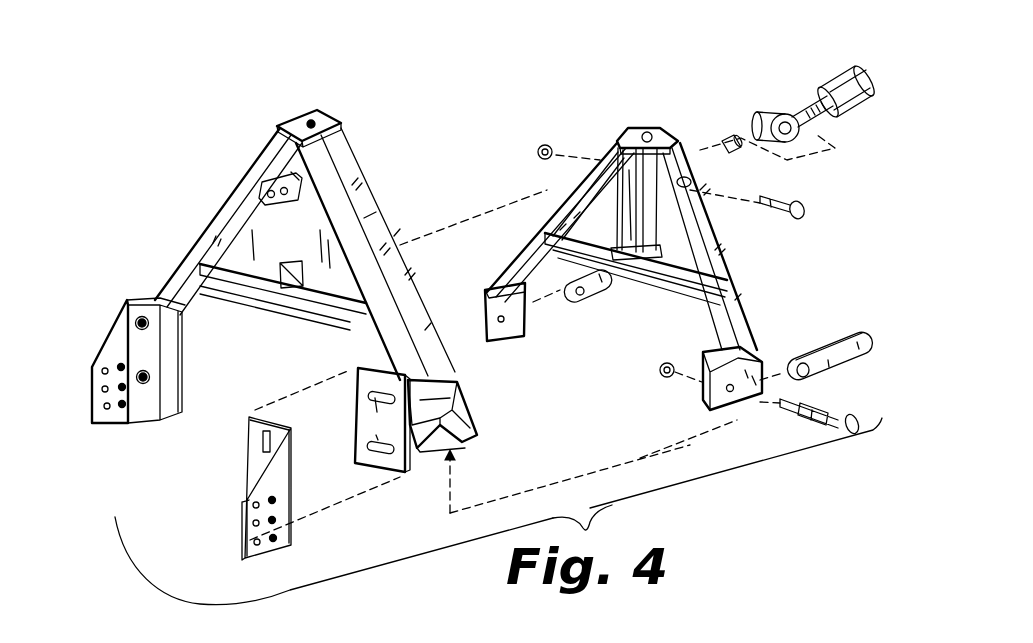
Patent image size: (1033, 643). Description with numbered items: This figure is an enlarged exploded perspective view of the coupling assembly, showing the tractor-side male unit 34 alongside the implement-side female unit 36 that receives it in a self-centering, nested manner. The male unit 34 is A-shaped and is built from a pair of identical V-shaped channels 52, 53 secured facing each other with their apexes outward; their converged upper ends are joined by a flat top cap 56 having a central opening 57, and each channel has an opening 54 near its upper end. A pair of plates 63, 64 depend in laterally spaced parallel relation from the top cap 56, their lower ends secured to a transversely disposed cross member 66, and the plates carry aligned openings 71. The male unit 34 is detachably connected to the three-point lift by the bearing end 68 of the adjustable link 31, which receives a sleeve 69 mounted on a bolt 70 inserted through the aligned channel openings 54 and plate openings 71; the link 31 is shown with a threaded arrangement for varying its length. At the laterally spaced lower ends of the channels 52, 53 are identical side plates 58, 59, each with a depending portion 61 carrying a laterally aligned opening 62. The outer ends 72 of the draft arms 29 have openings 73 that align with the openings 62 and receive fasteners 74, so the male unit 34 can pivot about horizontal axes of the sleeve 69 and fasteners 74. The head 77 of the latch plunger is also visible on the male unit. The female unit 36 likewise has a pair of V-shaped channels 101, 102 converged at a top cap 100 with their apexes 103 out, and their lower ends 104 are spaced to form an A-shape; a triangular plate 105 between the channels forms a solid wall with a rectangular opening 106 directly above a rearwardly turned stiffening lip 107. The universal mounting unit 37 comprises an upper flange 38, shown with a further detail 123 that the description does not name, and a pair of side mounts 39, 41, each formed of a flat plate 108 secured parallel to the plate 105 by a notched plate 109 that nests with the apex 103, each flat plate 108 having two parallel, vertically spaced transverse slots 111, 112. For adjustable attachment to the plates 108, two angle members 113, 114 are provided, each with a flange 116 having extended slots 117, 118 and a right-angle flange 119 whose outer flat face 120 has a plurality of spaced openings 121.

The draft arms 29 is at (712, 335).
The adjustable link 31 is at (812, 96).
The male unit 34 is at (681, 228).
The female unit 36 is at (316, 319).
The universal mounting unit 37 is at (262, 488).
The upper flange 38 is at (260, 195).
The side mount 39 is at (203, 405).
The side mount 41 is at (300, 588).
The V-shaped channel 52 is at (527, 242).
The V-shaped channel 53 is at (723, 283).
The opening 54 is at (597, 167).
The flat top cap 56 is at (644, 103).
The central opening 57 is at (650, 130).
The side plate 58 is at (631, 344).
The side plate 59 is at (632, 386).
The depending portion 61 is at (503, 323).
The opening 62 is at (503, 324).
The plate 63 is at (623, 203).
The plate 64 is at (650, 228).
The cross member 66 is at (673, 272).
The bearing end 68 is at (770, 112).
The sleeve 69 is at (730, 133).
The bolt 70 is at (806, 210).
The opening 71 is at (620, 150).
The outer end 72 is at (600, 291).
The opening 73 is at (582, 297).
The fastener 74 is at (820, 403).
The head 77 is at (617, 267).
The top cap 100 is at (327, 120).
The V-shaped channel 101 is at (248, 178).
The V-shaped channel 102 is at (365, 193).
The apex 103 is at (365, 230).
The lower end 104 is at (494, 427).
The triangular plate 105 is at (273, 248).
The rectangular opening 106 is at (298, 292).
The stiffening lip 107 is at (320, 314).
The flat plate 108 is at (289, 426).
The plate 109 is at (358, 323).
The slot 111 is at (168, 328).
The slot 112 is at (182, 392).
The angle member 113 is at (103, 323).
The angle member 114 is at (233, 498).
The flange 116 is at (123, 303).
The slot 117 is at (142, 300).
The slot 118 is at (125, 412).
The flange 119 is at (90, 425).
The outer flat face 120 is at (292, 470).
The openings 121 is at (116, 425).
The hole 123 is at (273, 187).